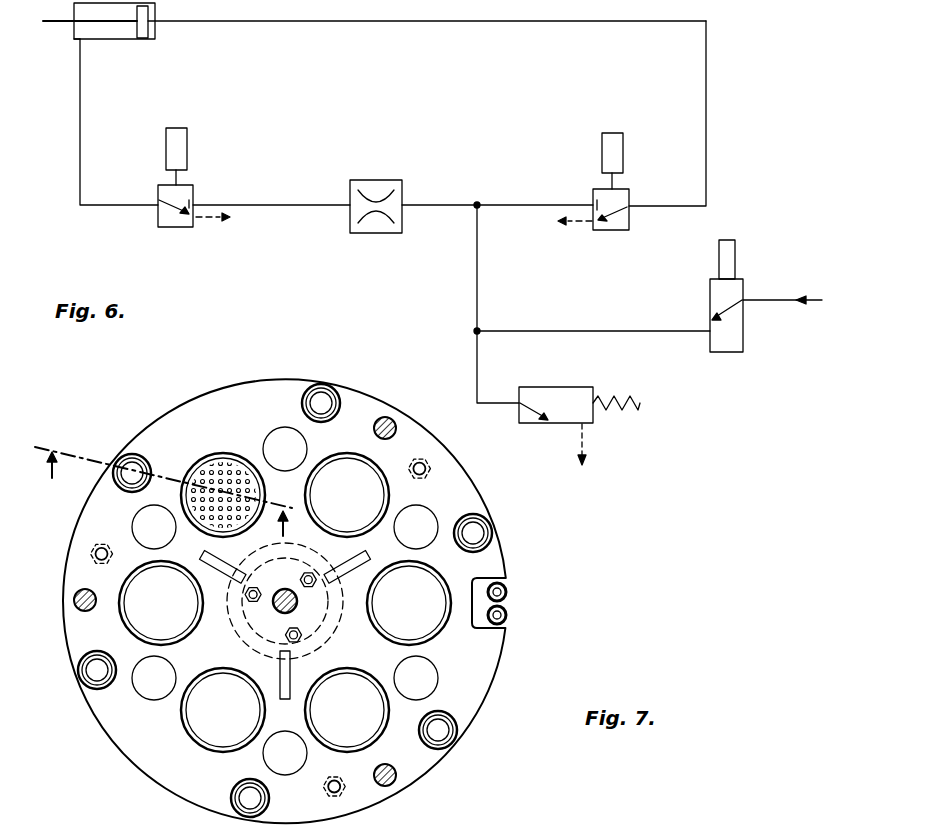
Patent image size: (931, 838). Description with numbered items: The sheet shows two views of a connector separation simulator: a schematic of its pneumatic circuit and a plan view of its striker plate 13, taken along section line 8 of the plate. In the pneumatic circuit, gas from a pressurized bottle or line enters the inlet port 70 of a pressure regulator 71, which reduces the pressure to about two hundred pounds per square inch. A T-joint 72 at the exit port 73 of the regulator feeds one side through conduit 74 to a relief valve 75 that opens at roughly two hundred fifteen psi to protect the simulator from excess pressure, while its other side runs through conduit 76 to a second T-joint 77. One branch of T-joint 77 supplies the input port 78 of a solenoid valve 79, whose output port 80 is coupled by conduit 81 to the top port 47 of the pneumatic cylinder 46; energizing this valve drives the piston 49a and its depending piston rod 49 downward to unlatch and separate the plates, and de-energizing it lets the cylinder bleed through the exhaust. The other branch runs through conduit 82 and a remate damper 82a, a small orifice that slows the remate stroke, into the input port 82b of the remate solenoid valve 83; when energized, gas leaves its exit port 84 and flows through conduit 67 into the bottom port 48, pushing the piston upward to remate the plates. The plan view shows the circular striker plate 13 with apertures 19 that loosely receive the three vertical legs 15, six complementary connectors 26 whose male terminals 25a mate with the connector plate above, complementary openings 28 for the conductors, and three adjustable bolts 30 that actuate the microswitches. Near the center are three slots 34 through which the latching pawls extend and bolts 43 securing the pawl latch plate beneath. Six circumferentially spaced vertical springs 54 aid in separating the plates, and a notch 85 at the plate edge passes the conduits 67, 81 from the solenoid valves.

In FIG. 6, the pneumatic cylinder 46 is at (98, 40).
In FIG. 6, the top port 47 is at (156, 23).
In FIG. 6, the bottom port 48 is at (78, 41).
In FIG. 6, the piston rod 49 is at (53, 24).
In FIG. 7, the piston rod 49 is at (277, 610).
In FIG. 6, the piston 49a is at (143, 34).
In FIG. 6, the conduit 67 is at (81, 142).
In FIG. 7, the conduit 67 is at (507, 617).
In FIG. 6, the inlet port 70 is at (763, 299).
In FIG. 6, the pressure regulator 71 is at (740, 338).
In FIG. 6, the T-joint 72 is at (476, 330).
In FIG. 6, the exit port 73 is at (710, 320).
In FIG. 6, the conduit 74 is at (476, 360).
In FIG. 6, the relief valve 75 is at (547, 424).
In FIG. 6, the conduit 76 is at (476, 240).
In FIG. 6, the T-joint 77 is at (479, 204).
In FIG. 6, the input port 78 is at (592, 205).
In FIG. 6, the solenoid valve 79 is at (618, 231).
In FIG. 6, the output port 80 is at (630, 210).
In FIG. 6, the conduit 81 is at (707, 158).
In FIG. 7, the conduit 81 is at (507, 593).
In FIG. 6, the conduit 82 is at (426, 204).
In FIG. 6, the remate damper 82a is at (376, 181).
In FIG. 6, the input port 82b is at (195, 204).
In FIG. 6, the remate solenoid valve 83 is at (178, 228).
In FIG. 6, the exit port 84 is at (158, 201).
In FIG. 7, the striker plate 13 is at (499, 680).
In FIG. 7, the vertical legs 15 is at (384, 416).
In FIG. 7, the apertures 19 is at (397, 431).
In FIG. 7, the complementary connector 26 is at (216, 456).
In FIG. 7, the complementary openings 28 is at (300, 445).
In FIG. 7, the adjustable bolt 30 is at (432, 468).
In FIG. 7, the slots 34 is at (215, 552).
In FIG. 7, the bolts 43 is at (302, 578).
In FIG. 7, the vertical springs 54 is at (323, 385).
In FIG. 7, the notches 85 is at (486, 578).
In FIG. 7, the section line 8- 8 is at (163, 504).
In FIG. 7, the male terminals 25a is at (430, 837).